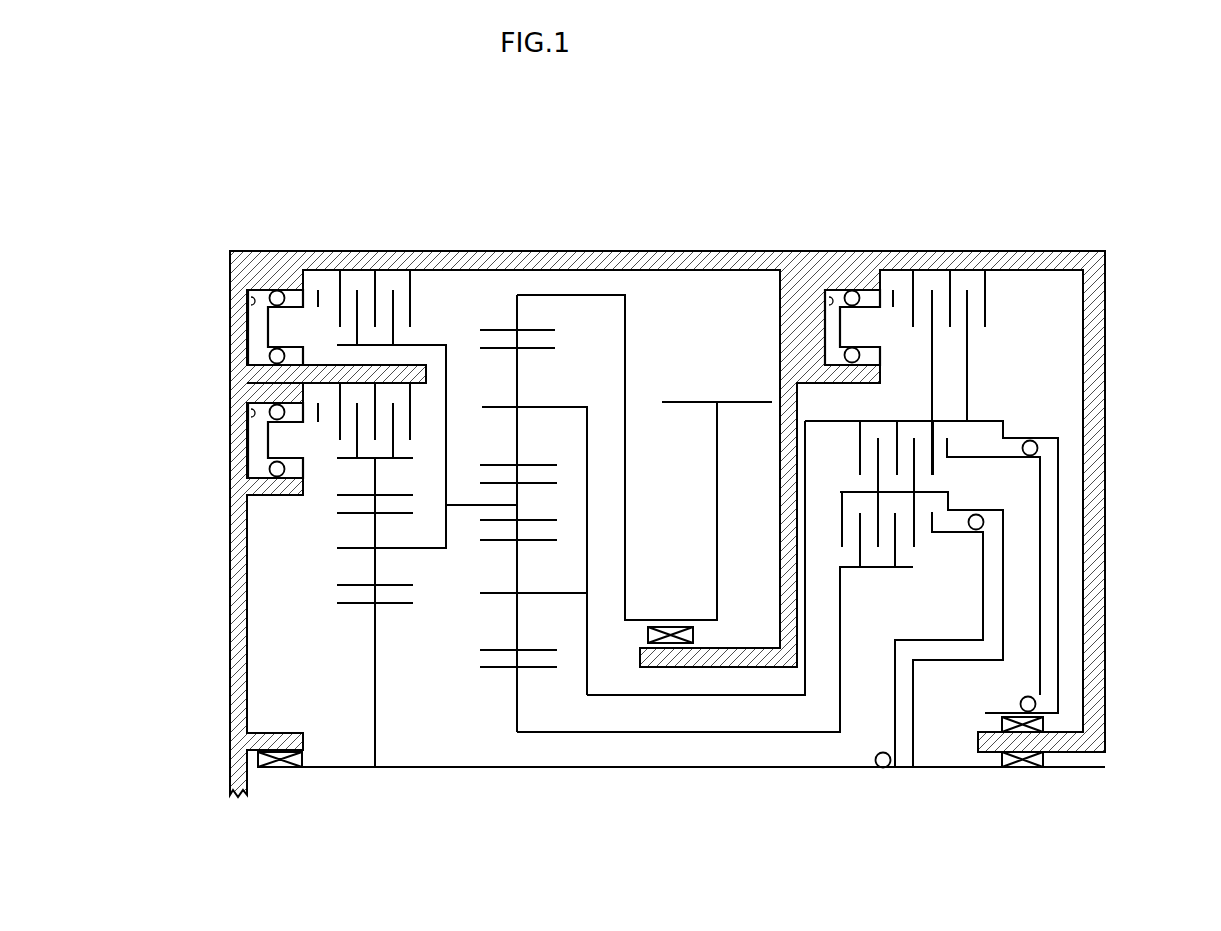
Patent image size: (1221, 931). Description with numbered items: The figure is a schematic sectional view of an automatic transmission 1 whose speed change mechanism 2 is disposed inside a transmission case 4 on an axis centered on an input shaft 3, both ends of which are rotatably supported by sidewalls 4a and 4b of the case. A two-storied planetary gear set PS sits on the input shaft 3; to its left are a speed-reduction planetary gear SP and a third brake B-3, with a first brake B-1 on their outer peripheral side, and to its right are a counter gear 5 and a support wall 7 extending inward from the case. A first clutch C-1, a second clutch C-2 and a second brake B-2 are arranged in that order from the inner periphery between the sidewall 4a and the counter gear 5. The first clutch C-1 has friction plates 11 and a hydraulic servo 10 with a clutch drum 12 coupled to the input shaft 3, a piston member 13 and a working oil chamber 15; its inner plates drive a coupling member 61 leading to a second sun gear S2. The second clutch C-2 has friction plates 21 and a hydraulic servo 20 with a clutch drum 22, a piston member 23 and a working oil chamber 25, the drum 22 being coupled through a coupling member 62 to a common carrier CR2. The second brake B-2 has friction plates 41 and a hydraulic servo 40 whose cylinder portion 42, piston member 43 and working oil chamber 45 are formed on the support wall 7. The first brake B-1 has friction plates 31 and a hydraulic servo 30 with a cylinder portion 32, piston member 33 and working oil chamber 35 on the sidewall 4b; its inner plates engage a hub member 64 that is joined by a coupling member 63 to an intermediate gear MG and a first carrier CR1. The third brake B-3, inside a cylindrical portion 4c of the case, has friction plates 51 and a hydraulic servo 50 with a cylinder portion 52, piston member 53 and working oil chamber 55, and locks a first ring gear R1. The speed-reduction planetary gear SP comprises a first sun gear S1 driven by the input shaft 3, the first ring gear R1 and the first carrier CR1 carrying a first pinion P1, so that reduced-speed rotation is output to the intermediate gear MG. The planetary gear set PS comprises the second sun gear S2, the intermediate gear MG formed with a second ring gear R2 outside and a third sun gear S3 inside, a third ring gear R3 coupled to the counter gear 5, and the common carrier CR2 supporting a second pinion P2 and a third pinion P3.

The automatic transmission 1 is at (692, 128).
The speed change mechanism 2 is at (850, 188).
The input shaft 3 is at (1075, 770).
The transmission case 4 is at (647, 246).
The sidewall 4a is at (1098, 418).
The sidewall 4b is at (238, 597).
The cylindrical portion 4c is at (428, 373).
The counter gear 5 is at (672, 405).
The support wall 7 is at (778, 533).
The hydraulic servo 10 is at (1005, 607).
The friction plates 11 is at (877, 545).
The clutch drum 12 is at (1007, 632).
The piston member 13 is at (980, 618).
The working oil chamber 15 is at (986, 652).
The hydraulic servo 20 is at (1065, 563).
The friction plates 21 is at (860, 433).
The clutch drum 22 is at (1058, 523).
The piston member 23 is at (1040, 510).
The working oil chamber 25 is at (1048, 672).
The hydraulic servo 30 is at (245, 328).
The friction plates 31 is at (412, 316).
The cylinder portion 32 is at (252, 299).
The piston member 33 is at (270, 332).
The working oil chamber 35 is at (252, 348).
The hydraulic servo 40 is at (822, 329).
The friction plates 41 is at (967, 372).
The cylinder portion 42 is at (828, 297).
The piston member 43 is at (840, 332).
The working oil chamber 45 is at (828, 352).
The hydraulic servo 50 is at (245, 441).
The friction plates 51 is at (391, 436).
The cylinder portion 52 is at (252, 412).
The piston member 53 is at (270, 435).
The working oil chamber 55 is at (252, 460).
The coupling member 61 is at (748, 735).
The coupling member 62 is at (697, 697).
The coupling member 63 is at (445, 443).
The hub member 64 is at (415, 350).
The first brake B-1 is at (436, 310).
The second brake B-2 is at (990, 342).
The third brake B-3 is at (426, 400).
The first clutch C-1 is at (927, 561).
The second clutch C-2 is at (952, 472).
The first sun gear S1 is at (357, 607).
The second sun gear S2 is at (493, 672).
The third sun gear S3 is at (492, 490).
The first ring gear R1 is at (387, 494).
The second ring gear R2 is at (541, 520).
The third ring gear R3 is at (541, 331).
The first pinion P1 is at (390, 585).
The second pinion P2 is at (527, 646).
The third pinion P3 is at (527, 463).
The first carrier CR1 is at (446, 526).
The common carrier CR2 is at (587, 563).
The intermediate gear MG is at (468, 522).
The planetary gear set PS is at (588, 358).
The speed-reduction planetary gear SP is at (356, 488).